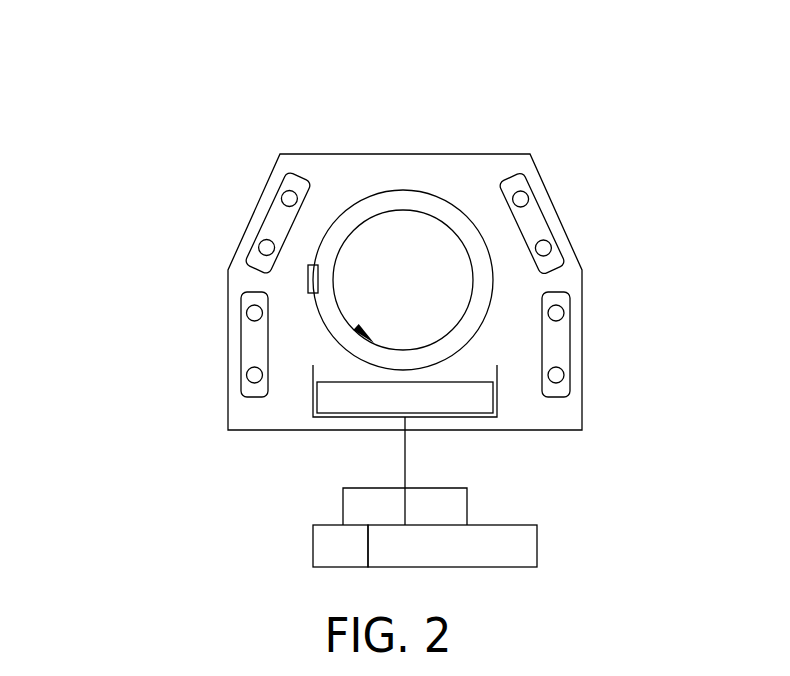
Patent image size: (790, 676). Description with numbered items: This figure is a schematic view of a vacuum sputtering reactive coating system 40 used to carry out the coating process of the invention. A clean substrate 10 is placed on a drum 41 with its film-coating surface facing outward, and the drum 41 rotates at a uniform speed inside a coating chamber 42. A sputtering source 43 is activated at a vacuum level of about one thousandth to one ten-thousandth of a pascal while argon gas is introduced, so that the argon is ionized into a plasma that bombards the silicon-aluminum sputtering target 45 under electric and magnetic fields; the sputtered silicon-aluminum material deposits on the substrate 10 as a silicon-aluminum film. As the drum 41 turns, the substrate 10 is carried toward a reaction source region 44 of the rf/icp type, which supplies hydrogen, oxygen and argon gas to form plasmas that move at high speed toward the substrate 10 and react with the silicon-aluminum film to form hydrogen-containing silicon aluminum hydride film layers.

The vacuum sputtering reactive coating system 40 is at (170, 142).
The drum 41 is at (437, 193).
The coating chamber 42 is at (372, 172).
The sputtering source 43 is at (272, 218).
The reaction source region 44 is at (316, 415).
The sputtering target 45 is at (286, 191).
The substrate 10 is at (308, 279).